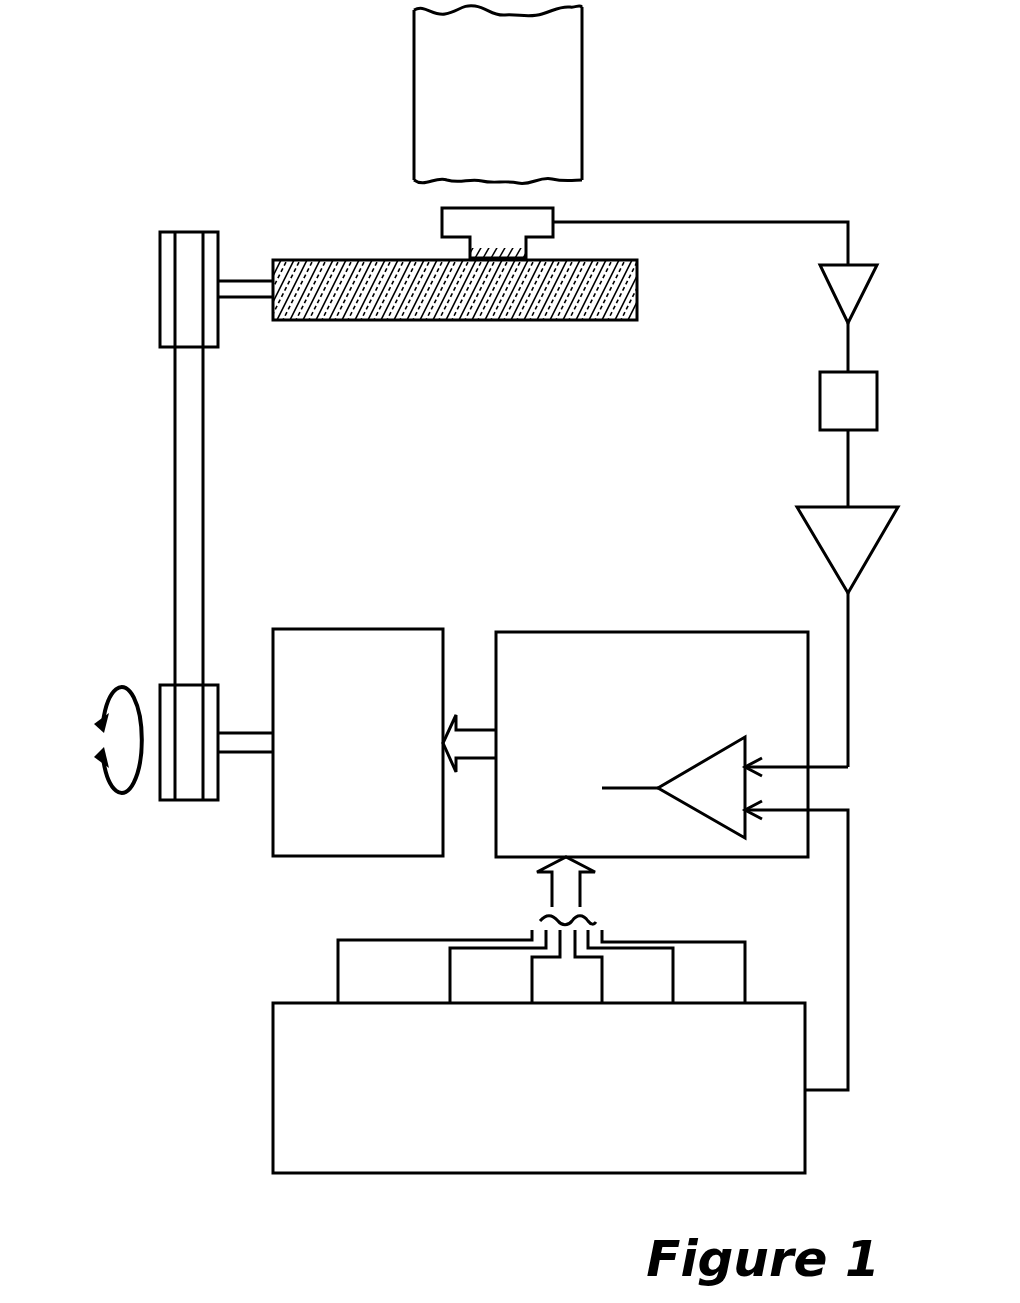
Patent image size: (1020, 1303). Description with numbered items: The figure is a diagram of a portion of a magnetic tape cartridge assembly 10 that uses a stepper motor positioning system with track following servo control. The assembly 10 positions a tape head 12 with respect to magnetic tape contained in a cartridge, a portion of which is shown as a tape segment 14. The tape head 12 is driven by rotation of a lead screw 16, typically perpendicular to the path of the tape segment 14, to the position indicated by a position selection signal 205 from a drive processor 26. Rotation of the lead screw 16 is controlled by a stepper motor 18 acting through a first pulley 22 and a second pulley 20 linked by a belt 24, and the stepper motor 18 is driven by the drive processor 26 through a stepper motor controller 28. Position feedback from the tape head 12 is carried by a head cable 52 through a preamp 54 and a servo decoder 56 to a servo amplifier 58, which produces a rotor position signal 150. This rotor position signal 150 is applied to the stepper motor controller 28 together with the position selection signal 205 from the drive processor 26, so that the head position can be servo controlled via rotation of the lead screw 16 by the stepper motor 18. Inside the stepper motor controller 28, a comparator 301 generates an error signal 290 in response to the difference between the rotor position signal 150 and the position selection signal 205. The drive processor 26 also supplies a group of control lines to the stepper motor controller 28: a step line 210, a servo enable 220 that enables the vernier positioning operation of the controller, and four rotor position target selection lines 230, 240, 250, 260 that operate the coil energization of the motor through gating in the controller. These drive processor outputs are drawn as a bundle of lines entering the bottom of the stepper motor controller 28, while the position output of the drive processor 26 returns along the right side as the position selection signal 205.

The magnetic tape cartridge assembly 10 is at (165, 1010).
The tape head 12 is at (442, 222).
The tape segment 14 is at (582, 112).
The lead screw 16 is at (540, 320).
The stepper motor 18 is at (383, 629).
The pulley 20 is at (218, 694).
The pulley 22 is at (212, 347).
The belt 24 is at (203, 482).
The drive processor 26 is at (314, 1175).
The stepper motor controller 28 is at (610, 632).
The head cable 52 is at (665, 222).
The preamp 54 is at (836, 300).
The servo decoder 56 is at (820, 390).
The servo amplifier 58 is at (812, 530).
The rotor position signal 150 is at (788, 766).
The position selection signal 205 is at (786, 816).
The step line 210 is at (338, 965).
The servo enable 220 is at (450, 965).
The rotor position target selection line 230 is at (532, 965).
The rotor position target selection line 240 is at (602, 965).
The rotor position target selection line 250 is at (673, 965).
The rotor position target selection line 260 is at (745, 965).
The error signal 290 is at (644, 784).
The comparator 301 is at (695, 818).